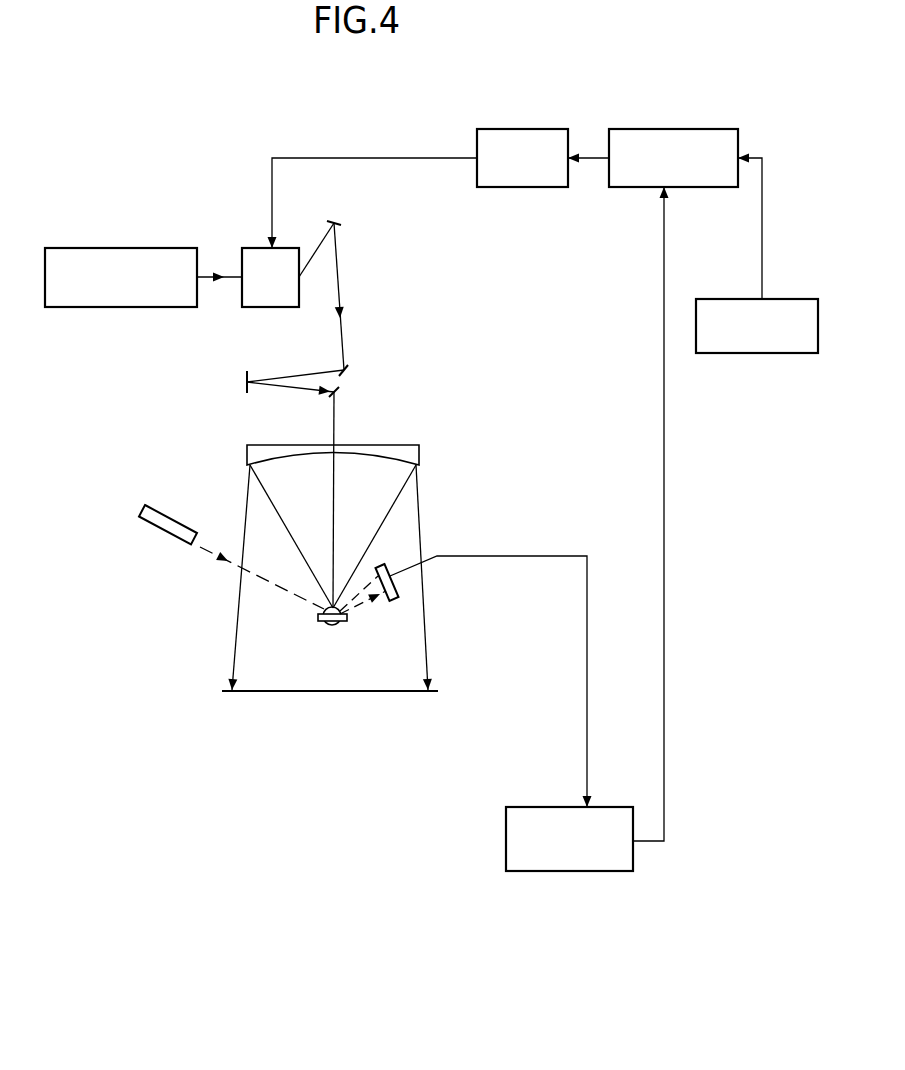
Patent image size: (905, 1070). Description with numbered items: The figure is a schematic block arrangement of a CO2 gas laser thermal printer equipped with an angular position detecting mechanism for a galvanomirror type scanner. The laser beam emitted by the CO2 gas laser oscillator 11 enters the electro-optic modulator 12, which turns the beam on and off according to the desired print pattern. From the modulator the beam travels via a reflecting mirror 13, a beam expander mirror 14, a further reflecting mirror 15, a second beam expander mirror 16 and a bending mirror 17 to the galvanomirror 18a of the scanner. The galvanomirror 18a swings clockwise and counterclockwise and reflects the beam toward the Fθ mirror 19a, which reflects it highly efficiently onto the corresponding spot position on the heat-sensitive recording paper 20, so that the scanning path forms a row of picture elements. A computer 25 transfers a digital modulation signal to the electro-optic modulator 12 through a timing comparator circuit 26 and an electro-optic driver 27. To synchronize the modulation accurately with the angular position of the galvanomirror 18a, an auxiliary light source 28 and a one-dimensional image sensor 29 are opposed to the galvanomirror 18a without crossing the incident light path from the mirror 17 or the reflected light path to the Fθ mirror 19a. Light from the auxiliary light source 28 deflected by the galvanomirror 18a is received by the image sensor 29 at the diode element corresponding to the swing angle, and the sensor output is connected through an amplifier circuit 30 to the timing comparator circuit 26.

The CO2 gas laser oscillator 11 is at (122, 250).
The electro-optic modulator 12 is at (268, 308).
The reflecting mirror 13 is at (330, 276).
The beam expander mirror 14 is at (336, 221).
The reflecting mirror 15 is at (347, 371).
The beam expander mirror 16 is at (240, 382).
The bending mirror 17 is at (340, 393).
The galvanomirror 18a is at (341, 623).
The Fθ mirror 19a is at (412, 450).
The heat-sensitive recording paper 20 is at (250, 690).
The computer 25 is at (745, 354).
The timing comparator circuit 26 is at (667, 129).
The electro-optic driver 27 is at (536, 129).
The auxiliary light source 28 is at (165, 508).
The one-dimensional image sensor 29 is at (397, 600).
The amplifier circuit 30 is at (567, 872).